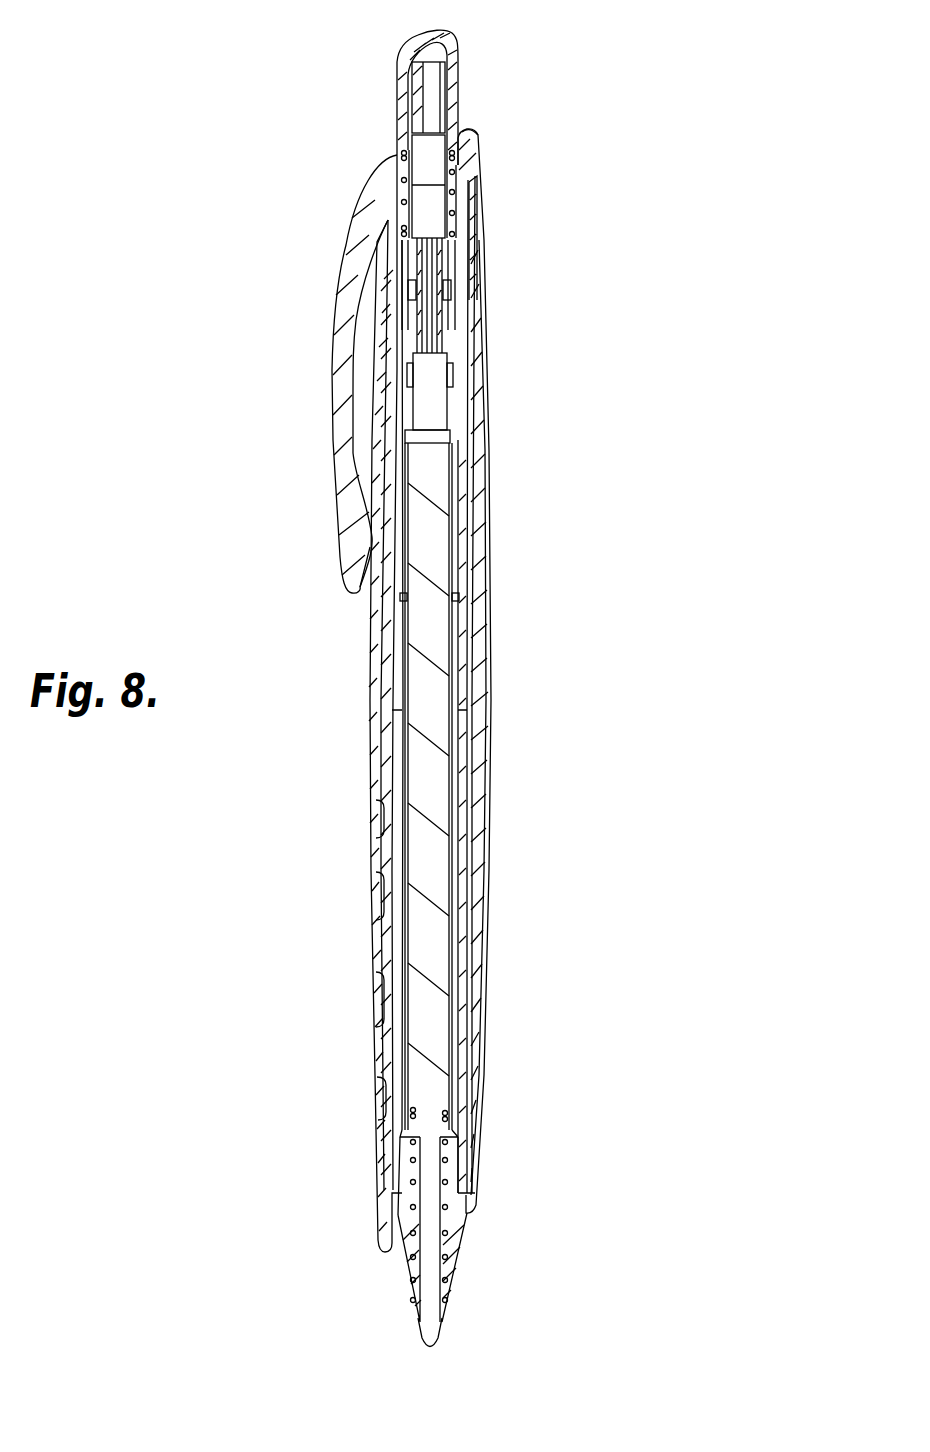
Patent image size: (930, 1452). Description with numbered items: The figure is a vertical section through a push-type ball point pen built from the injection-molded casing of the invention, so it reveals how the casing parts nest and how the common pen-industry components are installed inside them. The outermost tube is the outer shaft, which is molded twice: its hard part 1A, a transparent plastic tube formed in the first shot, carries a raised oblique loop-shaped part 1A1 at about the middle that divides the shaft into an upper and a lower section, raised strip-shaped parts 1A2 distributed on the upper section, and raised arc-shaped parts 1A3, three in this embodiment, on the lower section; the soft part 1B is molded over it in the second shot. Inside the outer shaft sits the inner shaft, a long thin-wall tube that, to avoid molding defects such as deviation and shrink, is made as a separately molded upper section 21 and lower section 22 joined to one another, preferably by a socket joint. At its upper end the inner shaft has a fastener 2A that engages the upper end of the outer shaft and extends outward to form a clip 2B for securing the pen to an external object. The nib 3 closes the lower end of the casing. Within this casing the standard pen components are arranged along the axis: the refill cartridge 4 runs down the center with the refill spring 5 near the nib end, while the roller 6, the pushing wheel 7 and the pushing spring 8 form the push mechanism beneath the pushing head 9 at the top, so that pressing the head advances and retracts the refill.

The hard part 1A is at (388, 560).
The oblique loop-shaped part 1A1 is at (490, 725).
The strip-shaped parts 1A2 is at (388, 1152).
The arc-shaped parts 1A3 is at (390, 833).
The soft part 1B is at (380, 633).
The fastener 2A is at (468, 167).
The clip 2B is at (342, 383).
The nib 3 is at (460, 1250).
The refill cartridge 4 is at (433, 622).
The refill spring 5 is at (415, 1253).
The roller 6 is at (447, 377).
The pushing wheel 7 is at (440, 113).
The pushing spring 8 is at (405, 203).
The pushing head 9 is at (403, 60).
The upper section 21 is at (400, 455).
The lower section 22 is at (402, 745).